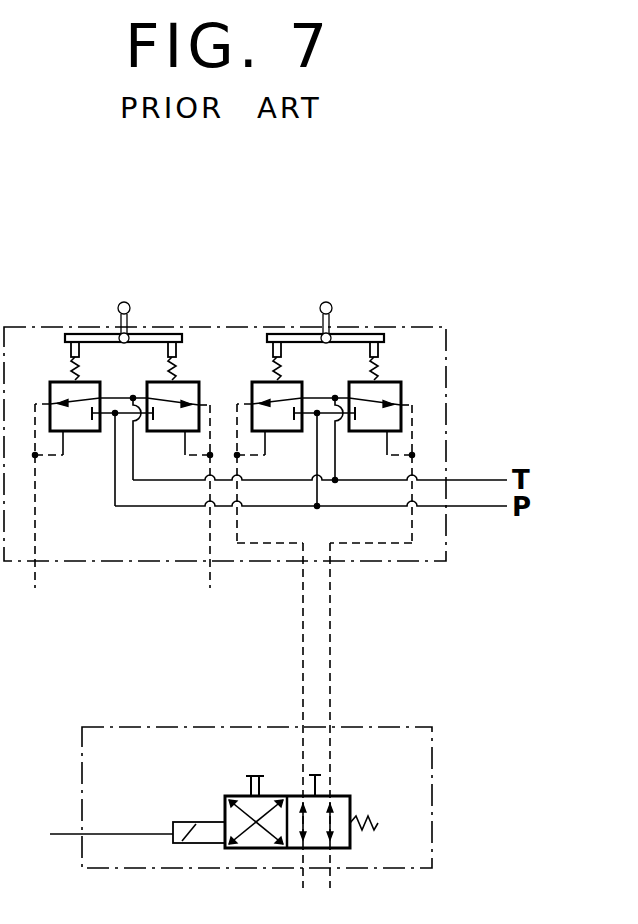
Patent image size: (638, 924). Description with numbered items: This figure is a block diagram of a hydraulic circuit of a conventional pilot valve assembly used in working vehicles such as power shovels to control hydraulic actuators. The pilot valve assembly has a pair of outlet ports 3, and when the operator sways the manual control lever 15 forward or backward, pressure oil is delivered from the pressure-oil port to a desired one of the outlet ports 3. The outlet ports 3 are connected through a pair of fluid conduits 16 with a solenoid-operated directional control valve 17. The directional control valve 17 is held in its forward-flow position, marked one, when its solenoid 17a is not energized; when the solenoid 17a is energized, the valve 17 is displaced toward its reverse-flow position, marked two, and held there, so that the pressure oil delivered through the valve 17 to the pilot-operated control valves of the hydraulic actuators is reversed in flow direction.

The outlet port 3 is at (251, 404).
The manual control lever 15 is at (130, 310).
The fluid conduit 16 is at (302, 683).
The solenoid-operated directional control valve 17 is at (351, 797).
The solenoid 17a is at (185, 822).